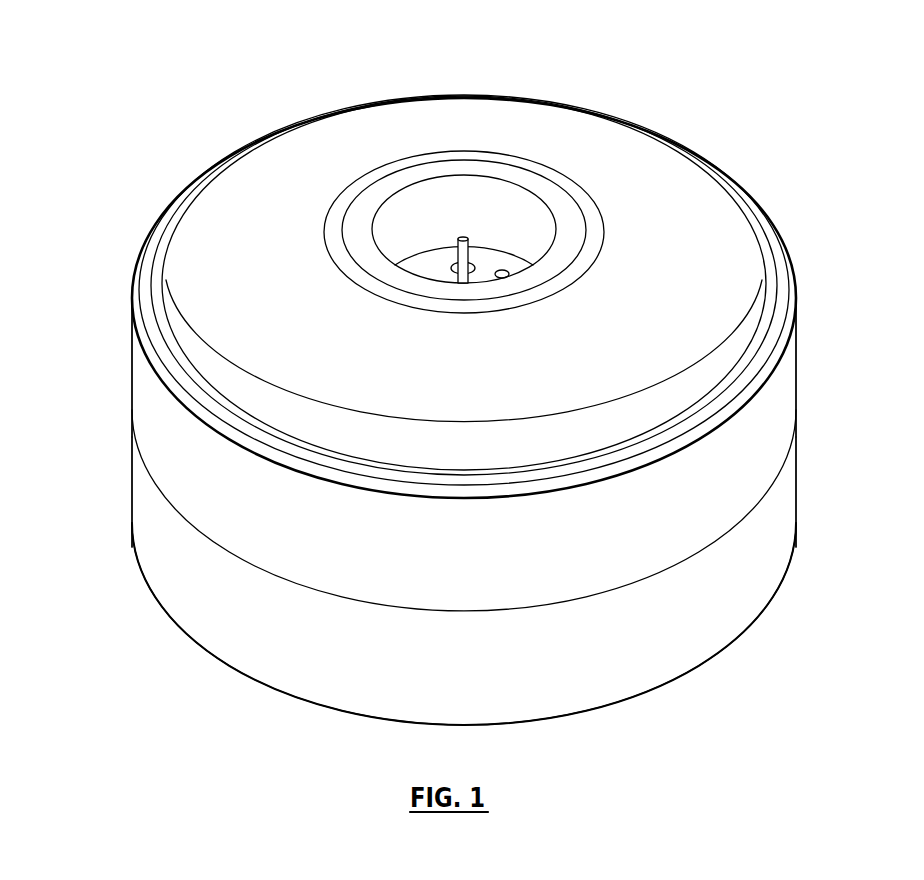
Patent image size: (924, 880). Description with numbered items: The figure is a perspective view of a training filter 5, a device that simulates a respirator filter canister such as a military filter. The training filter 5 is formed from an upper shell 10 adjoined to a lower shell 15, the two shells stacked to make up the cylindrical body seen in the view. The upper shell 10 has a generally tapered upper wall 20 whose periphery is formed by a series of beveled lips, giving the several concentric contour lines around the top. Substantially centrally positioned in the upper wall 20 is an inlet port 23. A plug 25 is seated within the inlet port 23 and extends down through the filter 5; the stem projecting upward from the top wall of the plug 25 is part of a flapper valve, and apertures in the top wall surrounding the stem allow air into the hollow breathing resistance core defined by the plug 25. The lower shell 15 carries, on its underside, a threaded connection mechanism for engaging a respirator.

The training filter 5 is at (838, 162).
The upper shell 10 is at (783, 420).
The lower shell 15 is at (783, 513).
The upper wall 20 is at (213, 274).
The inlet port 23 is at (422, 205).
The plug 25 is at (489, 240).